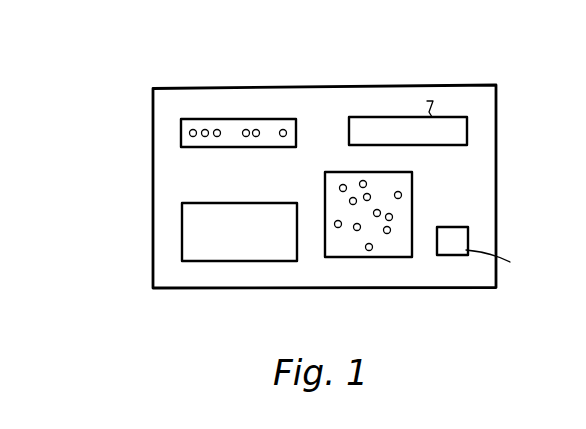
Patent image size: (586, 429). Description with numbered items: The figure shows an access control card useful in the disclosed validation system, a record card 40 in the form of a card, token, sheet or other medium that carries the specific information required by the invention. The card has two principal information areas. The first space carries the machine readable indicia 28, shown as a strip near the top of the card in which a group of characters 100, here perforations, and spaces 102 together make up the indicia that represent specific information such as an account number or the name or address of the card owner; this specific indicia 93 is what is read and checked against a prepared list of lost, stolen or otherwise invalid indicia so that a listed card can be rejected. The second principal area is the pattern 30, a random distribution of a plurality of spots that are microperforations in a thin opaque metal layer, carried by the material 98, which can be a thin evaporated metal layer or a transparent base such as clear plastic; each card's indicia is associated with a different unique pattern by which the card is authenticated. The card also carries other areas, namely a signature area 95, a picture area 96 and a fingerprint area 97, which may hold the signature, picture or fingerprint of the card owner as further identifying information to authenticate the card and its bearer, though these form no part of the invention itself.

The record card 40 is at (292, 62).
The machine readable indicia 28 is at (122, 139).
The specific indicia 93 is at (235, 147).
The group of characters 100 is at (217, 126).
The spaces 102 is at (270, 131).
The signature area 95 is at (467, 128).
The picture area 96 is at (182, 228).
The pattern-carrying material 98 is at (403, 218).
The pattern of microperforations 30 is at (372, 280).
The fingerprint area 97 is at (468, 240).